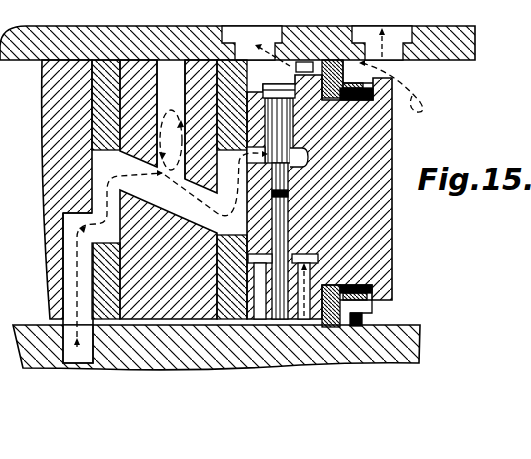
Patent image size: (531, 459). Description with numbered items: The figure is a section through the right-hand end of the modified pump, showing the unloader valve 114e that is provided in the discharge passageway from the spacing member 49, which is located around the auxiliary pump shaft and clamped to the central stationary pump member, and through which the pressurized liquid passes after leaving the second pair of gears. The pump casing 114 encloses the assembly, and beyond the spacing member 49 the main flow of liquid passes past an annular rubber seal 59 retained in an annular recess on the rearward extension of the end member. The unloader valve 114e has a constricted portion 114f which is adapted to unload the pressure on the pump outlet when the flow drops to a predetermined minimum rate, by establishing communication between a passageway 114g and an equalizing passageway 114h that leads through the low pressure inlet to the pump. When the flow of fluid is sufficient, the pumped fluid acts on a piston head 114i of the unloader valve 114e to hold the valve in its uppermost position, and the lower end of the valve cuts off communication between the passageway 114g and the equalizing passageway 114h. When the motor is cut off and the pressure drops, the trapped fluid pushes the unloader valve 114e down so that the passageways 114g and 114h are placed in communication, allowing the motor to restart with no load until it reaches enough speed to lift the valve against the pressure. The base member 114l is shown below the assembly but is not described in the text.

The pump casing 114 is at (163, 68).
The piston head 114i is at (283, 82).
The spacing member 49 is at (378, 140).
The unloader valve 114e is at (281, 193).
The constricted portion 114f is at (292, 246).
The equalizing passageway 114h is at (258, 281).
The passageway 114g is at (308, 323).
The base plate 114l is at (188, 325).
The annular rubber seal 59 is at (362, 318).